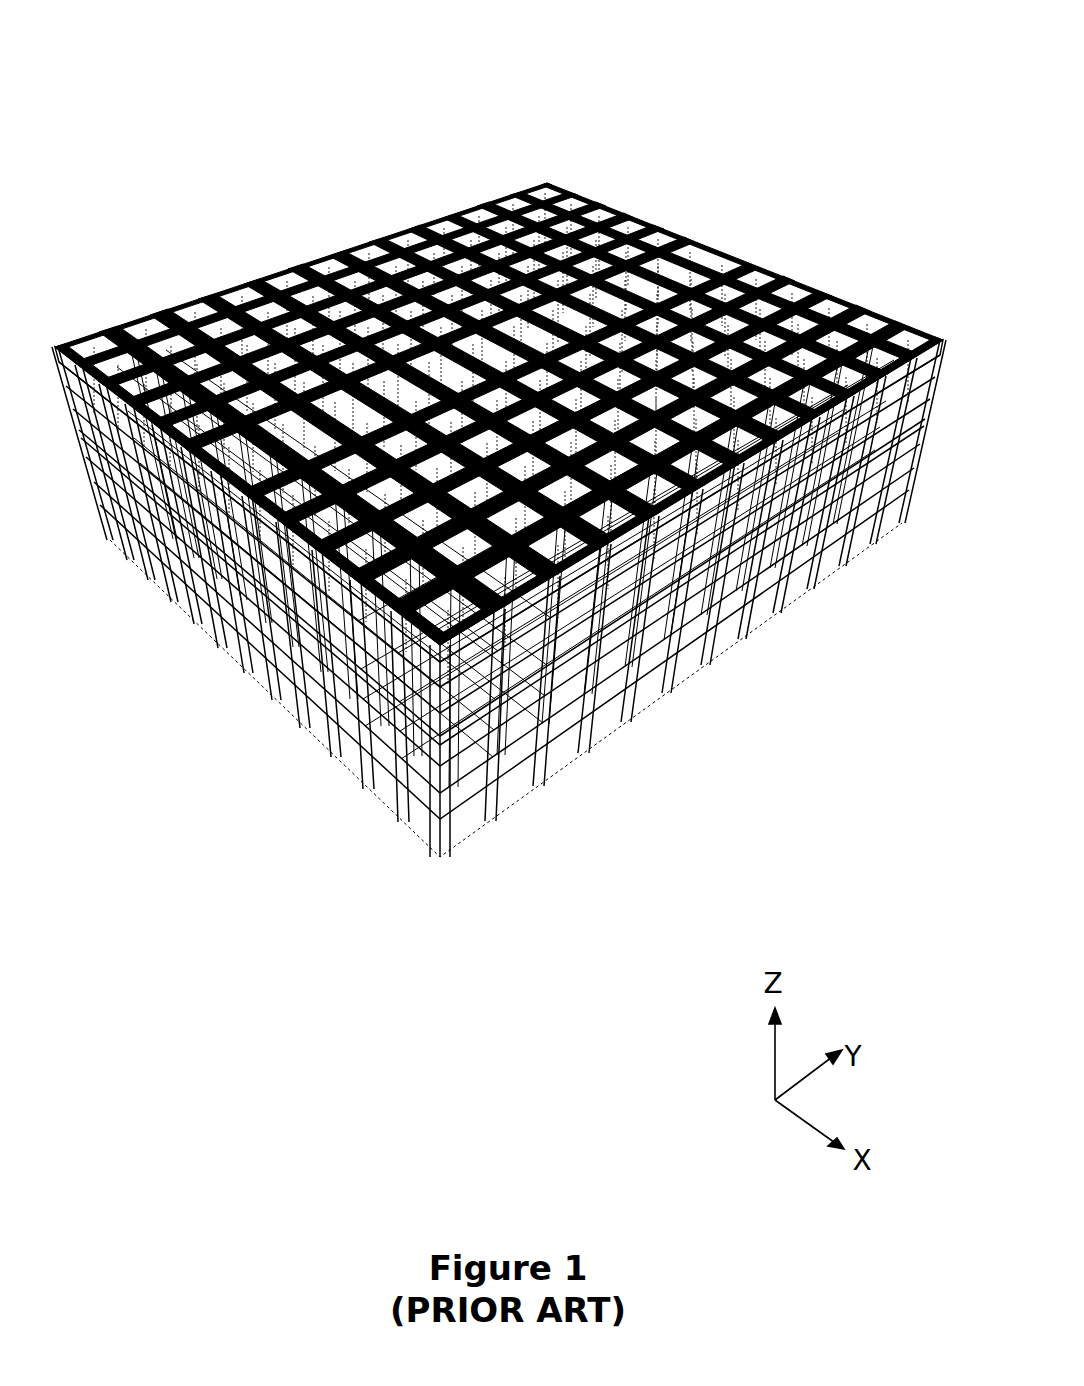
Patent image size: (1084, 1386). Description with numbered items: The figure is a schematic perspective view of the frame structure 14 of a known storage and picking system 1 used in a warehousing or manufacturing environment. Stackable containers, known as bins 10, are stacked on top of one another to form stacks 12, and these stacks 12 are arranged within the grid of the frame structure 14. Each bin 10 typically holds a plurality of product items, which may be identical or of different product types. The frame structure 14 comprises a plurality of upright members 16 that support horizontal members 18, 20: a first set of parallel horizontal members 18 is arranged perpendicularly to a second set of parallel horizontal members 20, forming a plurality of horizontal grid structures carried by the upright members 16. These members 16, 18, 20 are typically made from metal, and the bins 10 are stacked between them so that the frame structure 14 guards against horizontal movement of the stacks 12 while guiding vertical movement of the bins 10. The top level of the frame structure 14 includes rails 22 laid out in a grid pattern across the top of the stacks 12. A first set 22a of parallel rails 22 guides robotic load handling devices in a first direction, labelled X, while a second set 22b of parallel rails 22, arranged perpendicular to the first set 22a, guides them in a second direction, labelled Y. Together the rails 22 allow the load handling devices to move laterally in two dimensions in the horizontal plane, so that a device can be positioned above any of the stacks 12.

The storage and picking system 1 is at (693, 186).
The bins 10 is at (585, 570).
The stacks 12 is at (459, 766).
The frame structure 14 is at (790, 280).
The upright members 16 is at (345, 710).
The first set of parallel horizontal members 18 is at (805, 517).
The second set of parallel horizontal members 20 is at (287, 633).
The rails 22 is at (458, 350).
The first set of parallel rails 22a is at (285, 423).
The second set of parallel rails 22b is at (218, 393).